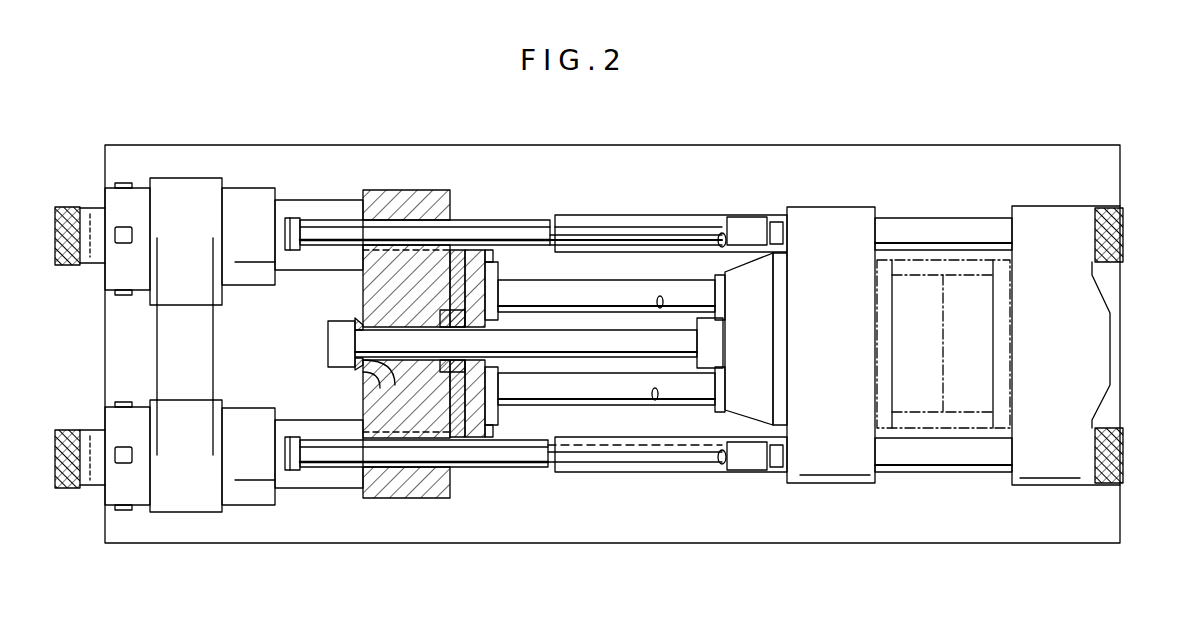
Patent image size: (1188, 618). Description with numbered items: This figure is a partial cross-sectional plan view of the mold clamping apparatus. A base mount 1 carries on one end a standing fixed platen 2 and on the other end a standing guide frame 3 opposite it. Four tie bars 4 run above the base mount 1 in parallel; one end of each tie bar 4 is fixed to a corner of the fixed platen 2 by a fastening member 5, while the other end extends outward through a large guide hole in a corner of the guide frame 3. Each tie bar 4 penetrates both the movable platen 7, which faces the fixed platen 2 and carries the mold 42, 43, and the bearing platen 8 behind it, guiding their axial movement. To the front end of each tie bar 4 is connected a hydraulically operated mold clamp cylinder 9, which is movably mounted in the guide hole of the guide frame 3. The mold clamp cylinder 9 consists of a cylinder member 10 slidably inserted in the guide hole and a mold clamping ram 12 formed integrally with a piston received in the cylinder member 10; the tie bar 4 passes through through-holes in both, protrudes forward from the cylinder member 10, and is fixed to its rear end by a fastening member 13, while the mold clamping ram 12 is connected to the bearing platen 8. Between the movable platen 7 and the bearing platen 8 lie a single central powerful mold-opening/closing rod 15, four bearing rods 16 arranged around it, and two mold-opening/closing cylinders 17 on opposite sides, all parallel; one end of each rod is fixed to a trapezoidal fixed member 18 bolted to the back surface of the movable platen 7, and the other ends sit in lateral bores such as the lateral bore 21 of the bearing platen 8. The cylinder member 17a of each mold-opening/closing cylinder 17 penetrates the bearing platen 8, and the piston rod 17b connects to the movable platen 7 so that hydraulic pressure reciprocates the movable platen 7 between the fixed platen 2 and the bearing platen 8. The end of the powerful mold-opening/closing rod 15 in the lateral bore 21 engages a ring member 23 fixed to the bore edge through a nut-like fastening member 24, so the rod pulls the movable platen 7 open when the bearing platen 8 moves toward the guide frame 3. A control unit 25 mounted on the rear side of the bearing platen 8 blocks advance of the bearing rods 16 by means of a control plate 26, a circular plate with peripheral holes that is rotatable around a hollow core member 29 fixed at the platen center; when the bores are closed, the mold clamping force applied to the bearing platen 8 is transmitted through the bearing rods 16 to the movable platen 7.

The base mount 1 is at (436, 145).
The fixed platen 2 is at (1100, 344).
The guide frame 3 is at (157, 330).
The tie bar 4 is at (618, 218).
The fastening member 5 is at (1118, 232).
The movable platen 7 is at (826, 230).
The bearing platen 8 is at (388, 212).
The mold clamp cylinder 9 is at (117, 172).
The cylinder member 10 is at (118, 266).
The mold clamping ram 12 is at (298, 212).
The fastening member 13 is at (66, 210).
The powerful mold-opening/closing rod 15 is at (370, 345).
The bearing rod 16 is at (668, 300).
The mold-opening/closing cylinder 17 is at (522, 220).
The cylinder member 17a is at (340, 232).
The tie rod section 17b is at (668, 238).
The fixed member 18 is at (750, 288).
The lateral bore 21 is at (362, 380).
The ring member 23 is at (360, 316).
The nut-like fastening member 24 is at (340, 334).
The control unit 25 is at (492, 278).
The control plate 26 is at (458, 250).
The hollow core member 29 is at (462, 372).
The mold 42 is at (914, 292).
The mold 43 is at (972, 288).